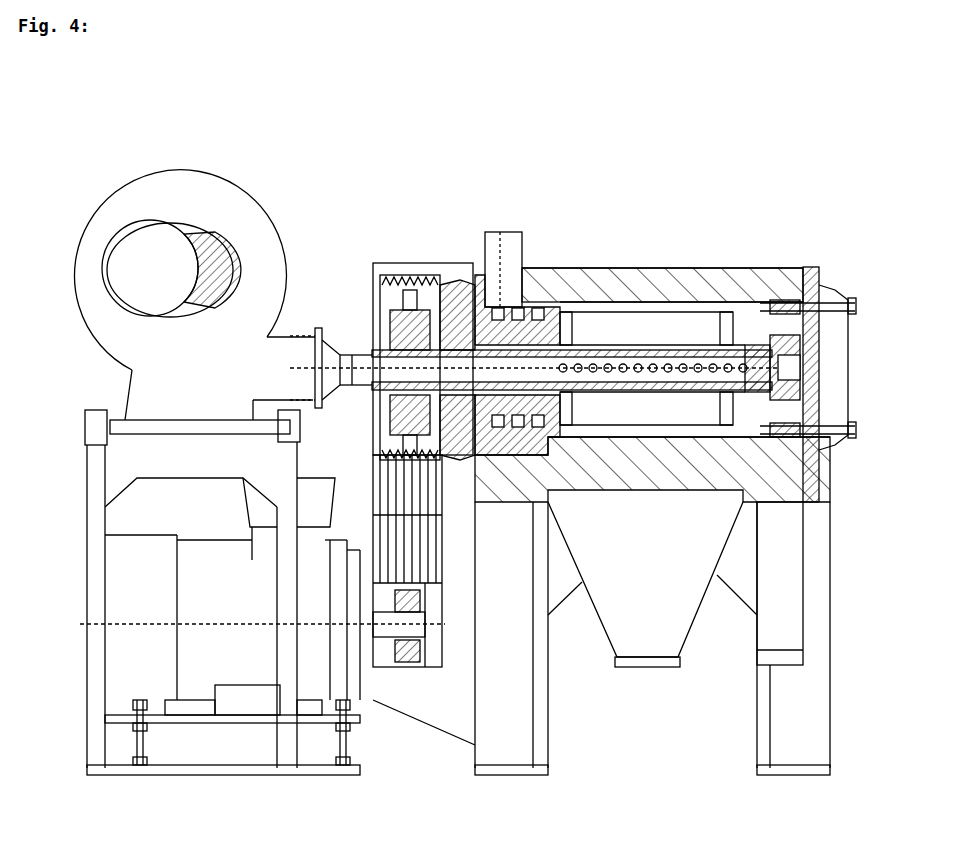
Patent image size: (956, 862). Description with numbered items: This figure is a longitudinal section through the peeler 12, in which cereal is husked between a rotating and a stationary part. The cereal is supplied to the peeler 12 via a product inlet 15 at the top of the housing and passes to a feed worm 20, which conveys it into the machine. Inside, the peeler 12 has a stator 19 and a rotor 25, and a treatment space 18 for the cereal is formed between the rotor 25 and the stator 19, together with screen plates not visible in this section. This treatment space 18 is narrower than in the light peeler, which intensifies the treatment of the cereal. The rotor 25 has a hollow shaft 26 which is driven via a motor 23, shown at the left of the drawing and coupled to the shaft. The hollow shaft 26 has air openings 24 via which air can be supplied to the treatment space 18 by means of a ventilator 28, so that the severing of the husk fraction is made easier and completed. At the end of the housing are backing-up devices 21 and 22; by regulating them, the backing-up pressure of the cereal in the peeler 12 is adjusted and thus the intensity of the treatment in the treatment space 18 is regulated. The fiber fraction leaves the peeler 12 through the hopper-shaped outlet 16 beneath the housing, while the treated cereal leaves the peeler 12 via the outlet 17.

The peeler 12 is at (803, 160).
The product inlet 15 is at (502, 232).
The outlet 16 is at (652, 667).
The outlet 17 is at (782, 668).
The treatment space 18 is at (613, 290).
The stator 19 is at (545, 300).
The feed worm 20 is at (585, 278).
The backing-up device 21 is at (810, 460).
The backing-up device 22 is at (798, 290).
The motor 23 is at (140, 590).
The air openings 24 is at (690, 290).
The rotor 25 is at (727, 290).
The hollow shaft 26 is at (372, 340).
The ventilator 28 is at (263, 197).